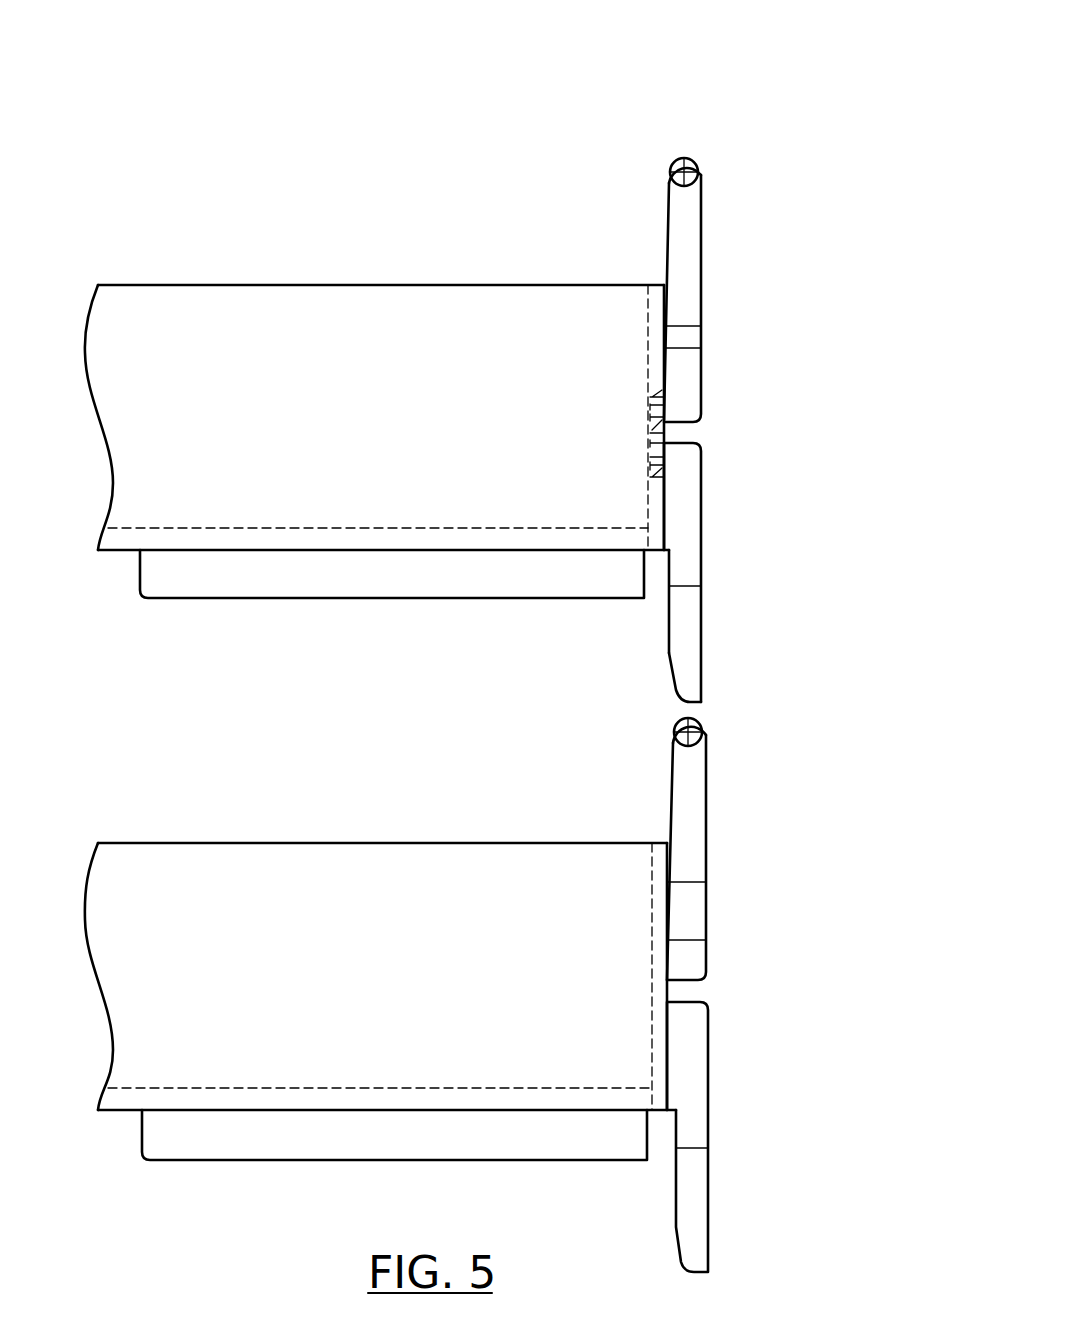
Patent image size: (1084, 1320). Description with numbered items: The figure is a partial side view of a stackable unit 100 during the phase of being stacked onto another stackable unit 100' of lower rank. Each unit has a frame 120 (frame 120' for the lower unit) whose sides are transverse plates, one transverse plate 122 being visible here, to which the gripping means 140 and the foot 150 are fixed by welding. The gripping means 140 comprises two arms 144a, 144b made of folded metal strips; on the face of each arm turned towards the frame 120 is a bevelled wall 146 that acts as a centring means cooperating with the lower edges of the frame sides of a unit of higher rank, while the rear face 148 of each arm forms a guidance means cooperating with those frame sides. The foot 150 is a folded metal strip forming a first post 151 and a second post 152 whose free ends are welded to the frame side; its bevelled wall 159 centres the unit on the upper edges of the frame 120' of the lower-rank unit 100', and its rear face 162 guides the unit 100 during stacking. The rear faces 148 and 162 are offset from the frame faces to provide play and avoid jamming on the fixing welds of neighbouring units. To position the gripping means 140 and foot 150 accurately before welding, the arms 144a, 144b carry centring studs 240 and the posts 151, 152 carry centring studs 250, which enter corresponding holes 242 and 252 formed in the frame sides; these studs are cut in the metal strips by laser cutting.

The stackable unit 100 is at (507, 482).
The stackable unit of lower rank 100' is at (396, 948).
The frame 120 is at (377, 352).
The frame of lower-rank stackable unit 120' is at (380, 927).
The transverse plate 122 is at (668, 348).
The gripping means 140 is at (724, 140).
The first arm 144a is at (701, 222).
The second arm 144b is at (778, 262).
The bevelled wall 146 is at (667, 180).
The rear face 148 is at (667, 242).
The foot 150 is at (723, 658).
The first post 151 is at (703, 625).
The second post 152 is at (783, 612).
The bevelled wall 159 is at (683, 680).
The rear face 162 is at (668, 623).
The centring stud 240 is at (665, 410).
The hole 242 is at (655, 400).
The centring stud 250 is at (665, 456).
The hole 252 is at (655, 462).